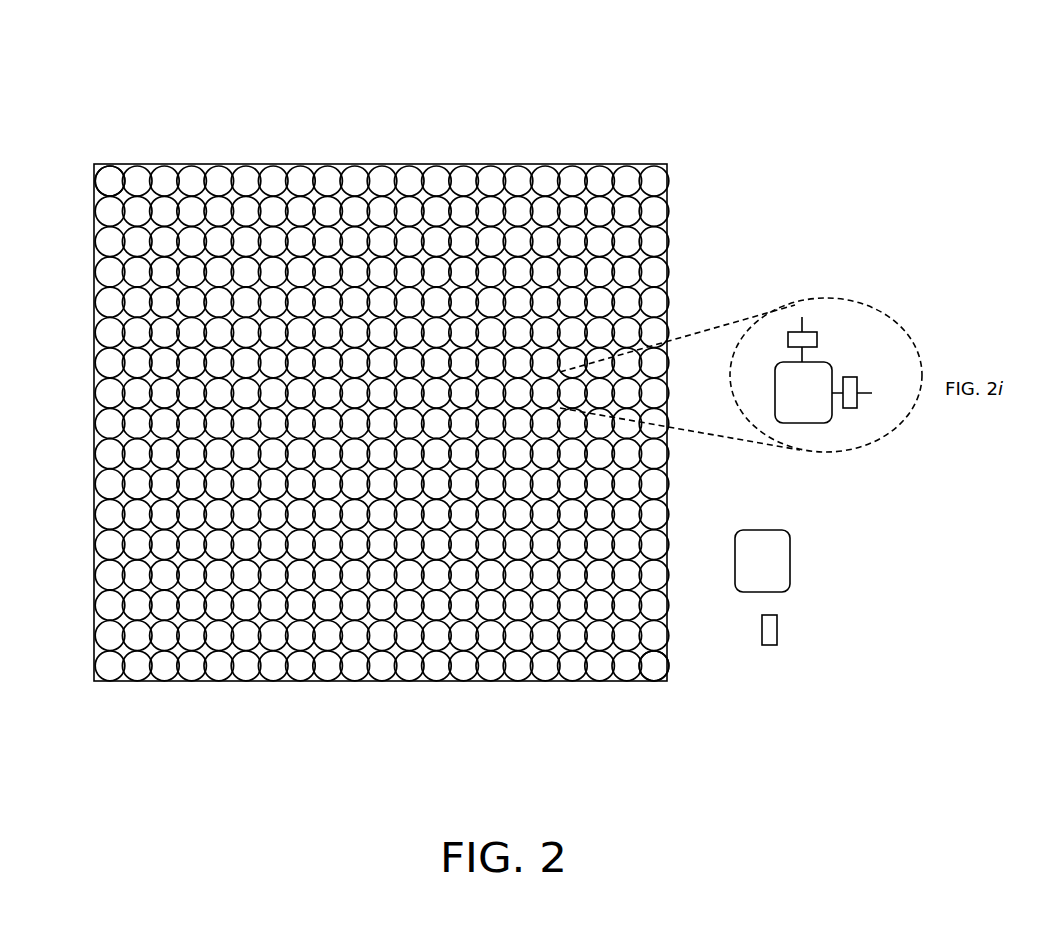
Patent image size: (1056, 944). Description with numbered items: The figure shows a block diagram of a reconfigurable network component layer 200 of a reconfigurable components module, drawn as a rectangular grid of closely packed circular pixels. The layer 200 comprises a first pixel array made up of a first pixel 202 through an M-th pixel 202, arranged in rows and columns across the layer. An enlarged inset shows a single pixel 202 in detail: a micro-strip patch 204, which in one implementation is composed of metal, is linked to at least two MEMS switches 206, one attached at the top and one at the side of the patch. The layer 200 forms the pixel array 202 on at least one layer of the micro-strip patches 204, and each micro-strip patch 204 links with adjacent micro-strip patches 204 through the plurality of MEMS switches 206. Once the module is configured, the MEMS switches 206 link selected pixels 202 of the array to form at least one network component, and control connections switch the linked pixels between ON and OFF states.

In FIG. 2, the reconfigurable network component layer 200 is at (663, 112).
In FIG. 2, the pixel 202 is at (642, 732).
In FIG. 2i, the pixel 202 is at (741, 358).
In FIG. 2, the micro-strip patch 204 is at (872, 561).
In FIG. 2i, the micro-strip patch 204 is at (820, 402).
In FIG. 2, the MEMS switch 206 is at (869, 630).
In FIG. 2i, the MEMS switch 206 is at (817, 344).